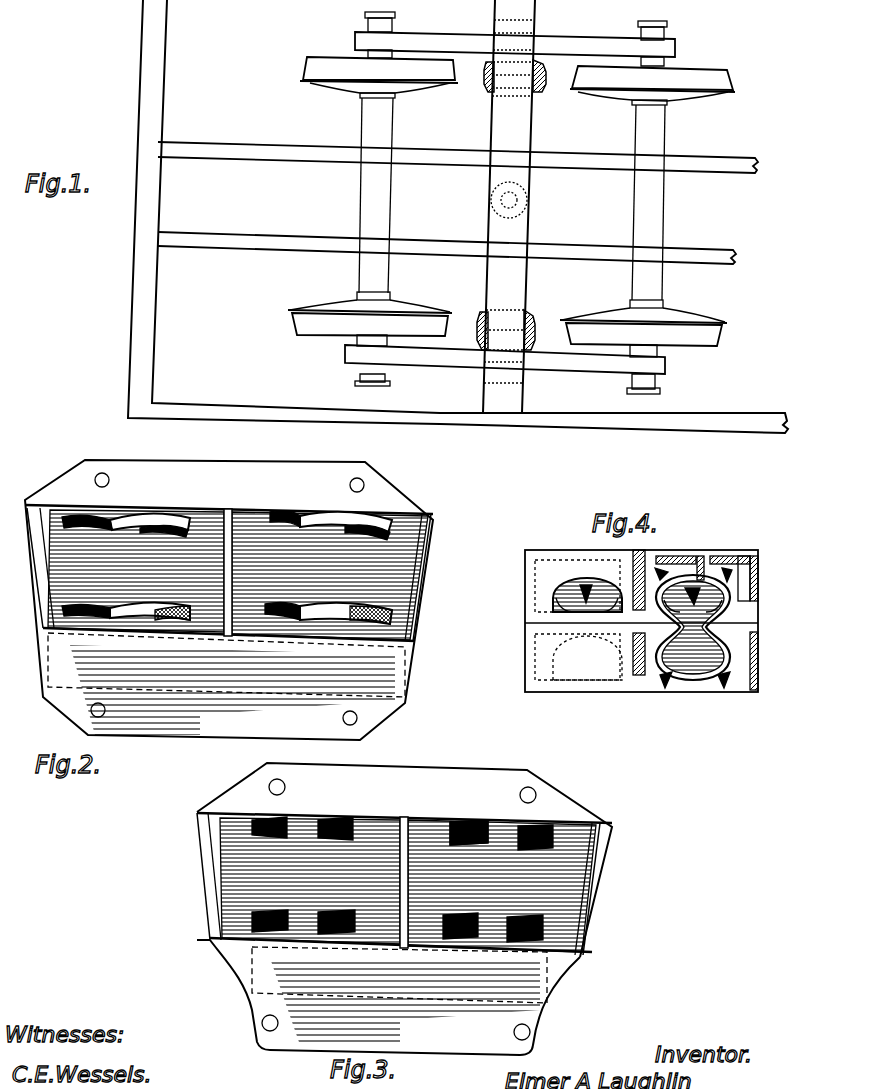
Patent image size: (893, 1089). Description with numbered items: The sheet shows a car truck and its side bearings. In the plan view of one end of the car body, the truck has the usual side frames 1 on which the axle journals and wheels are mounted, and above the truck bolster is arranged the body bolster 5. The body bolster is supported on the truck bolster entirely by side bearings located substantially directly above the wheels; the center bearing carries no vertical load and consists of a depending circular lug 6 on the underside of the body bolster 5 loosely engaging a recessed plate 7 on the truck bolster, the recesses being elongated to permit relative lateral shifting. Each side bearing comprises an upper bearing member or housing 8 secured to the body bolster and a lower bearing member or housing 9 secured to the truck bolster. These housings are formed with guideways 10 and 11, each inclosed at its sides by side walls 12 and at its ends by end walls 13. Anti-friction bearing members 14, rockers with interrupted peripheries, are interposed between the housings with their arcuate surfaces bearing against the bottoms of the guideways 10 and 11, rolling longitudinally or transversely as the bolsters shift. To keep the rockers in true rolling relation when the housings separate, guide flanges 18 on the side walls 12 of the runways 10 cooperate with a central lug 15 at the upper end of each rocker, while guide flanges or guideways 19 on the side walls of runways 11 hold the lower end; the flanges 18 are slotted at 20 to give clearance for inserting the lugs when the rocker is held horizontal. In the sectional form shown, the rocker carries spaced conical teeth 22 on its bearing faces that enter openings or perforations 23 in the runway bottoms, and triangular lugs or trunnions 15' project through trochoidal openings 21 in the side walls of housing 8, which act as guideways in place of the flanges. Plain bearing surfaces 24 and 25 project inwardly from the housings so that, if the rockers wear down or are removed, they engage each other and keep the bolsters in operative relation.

In FIG. 1, the side frame 1 is at (588, 46).
In FIG. 1, the body bolster 5 is at (505, 120).
In FIG. 1, the depending circular lug 6 is at (517, 208).
In FIG. 1, the recessed plate 7 is at (528, 193).
In FIG. 1, the upper bearing member or housing 8 is at (537, 82).
In FIG. 2, the upper bearing member or housing 8 is at (375, 475).
In FIG. 4, the upper bearing member or housing 8 is at (744, 565).
In FIG. 4, the lower bearing member or housing 9 is at (742, 690).
In FIG. 3, the lower bearing member or housing 9 is at (580, 812).
In FIG. 2, the guideway 10 is at (235, 575).
In FIG. 3, the guideway 11 is at (403, 885).
In FIG. 2, the side wall 12 is at (228, 530).
In FIG. 3, the side wall 12 is at (406, 830).
In FIG. 2, the end wall 13 is at (36, 580).
In FIG. 3, the end wall 13 is at (208, 875).
In FIG. 4, the anti-friction bearing member 14 is at (735, 596).
In FIG. 3, the anti-friction bearing member 14 is at (486, 816).
In FIG. 4, the central lug 15 is at (742, 582).
In FIG. 4, the lug or trunnion 15' is at (549, 626).
In FIG. 2, the guide flange 18 is at (160, 515).
In FIG. 3, the guide flange or guideway 19 is at (512, 960).
In FIG. 2, the slot 20 is at (95, 518).
In FIG. 4, the opening 21 is at (556, 604).
In FIG. 4, the conical tooth 22 is at (764, 677).
In FIG. 4, the opening or perforation 23 is at (662, 570).
In FIG. 2, the plain bearing surface 24 is at (380, 685).
In FIG. 3, the plain bearing surface 25 is at (530, 990).